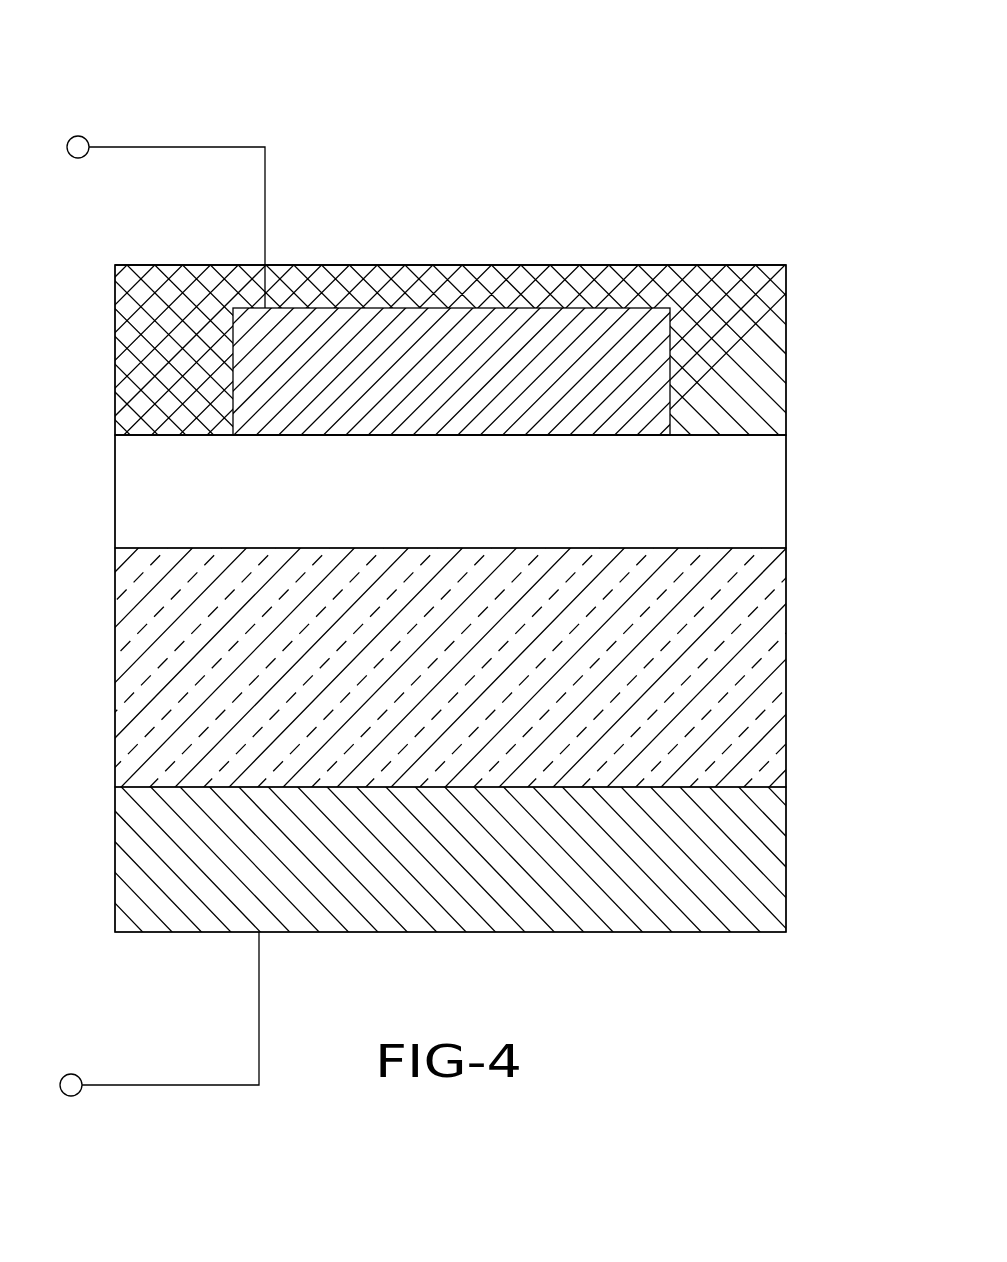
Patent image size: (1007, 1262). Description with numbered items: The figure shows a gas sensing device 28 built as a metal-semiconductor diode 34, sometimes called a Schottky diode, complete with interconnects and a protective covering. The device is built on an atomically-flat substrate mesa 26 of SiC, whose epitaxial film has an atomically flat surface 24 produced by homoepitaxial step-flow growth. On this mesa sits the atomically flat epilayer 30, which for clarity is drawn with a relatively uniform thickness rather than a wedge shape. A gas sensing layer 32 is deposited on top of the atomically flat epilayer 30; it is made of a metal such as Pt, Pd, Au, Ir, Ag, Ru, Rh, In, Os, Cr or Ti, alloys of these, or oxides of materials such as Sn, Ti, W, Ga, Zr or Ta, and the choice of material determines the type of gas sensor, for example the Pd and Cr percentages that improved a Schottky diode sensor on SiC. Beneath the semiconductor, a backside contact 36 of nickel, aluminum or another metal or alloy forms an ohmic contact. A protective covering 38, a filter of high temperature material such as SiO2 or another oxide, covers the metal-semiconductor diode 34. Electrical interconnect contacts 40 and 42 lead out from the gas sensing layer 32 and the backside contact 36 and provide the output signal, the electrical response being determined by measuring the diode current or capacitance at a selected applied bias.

The atomically flat surface 24 is at (723, 437).
The atomically-flat substrate mesa 26 is at (710, 638).
The gas sensing device 28 is at (805, 287).
The atomically flat epilayer 30 is at (750, 490).
The gas sensing layer 32 is at (530, 308).
The metal-semiconductor diode 34 is at (703, 127).
The backside contact 36 is at (697, 932).
The protective covering 38 is at (336, 265).
The electrical interconnect contact 40 is at (153, 147).
The electrical interconnect contact 42 is at (160, 1085).